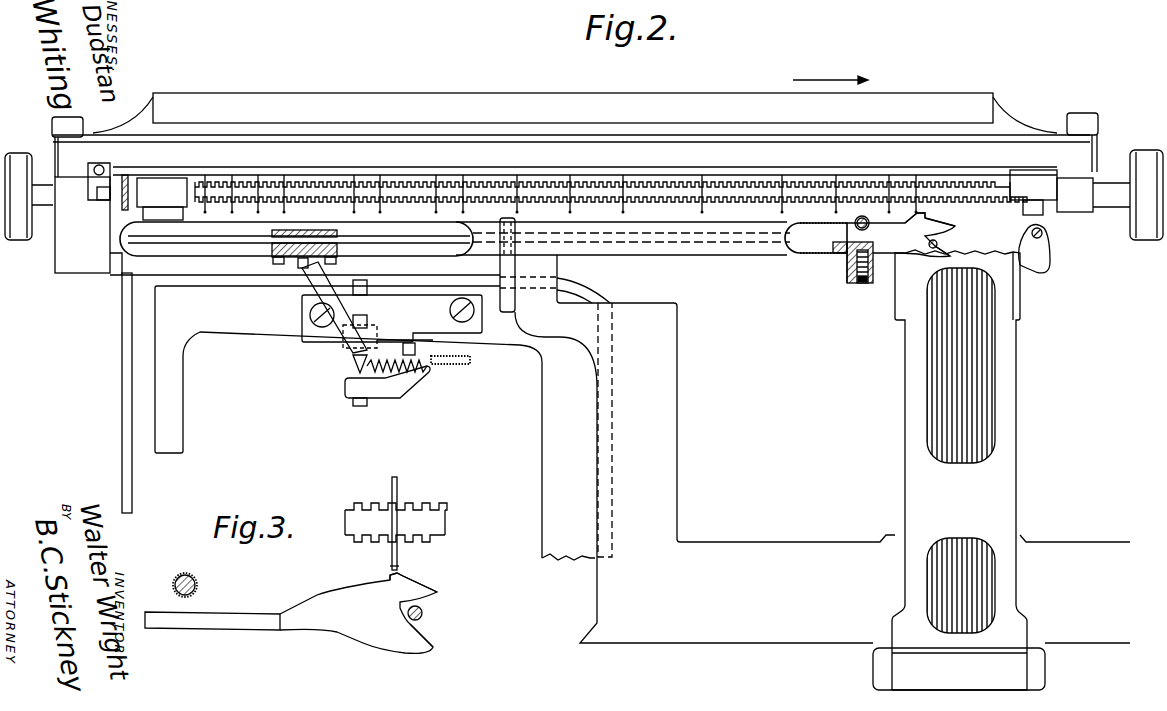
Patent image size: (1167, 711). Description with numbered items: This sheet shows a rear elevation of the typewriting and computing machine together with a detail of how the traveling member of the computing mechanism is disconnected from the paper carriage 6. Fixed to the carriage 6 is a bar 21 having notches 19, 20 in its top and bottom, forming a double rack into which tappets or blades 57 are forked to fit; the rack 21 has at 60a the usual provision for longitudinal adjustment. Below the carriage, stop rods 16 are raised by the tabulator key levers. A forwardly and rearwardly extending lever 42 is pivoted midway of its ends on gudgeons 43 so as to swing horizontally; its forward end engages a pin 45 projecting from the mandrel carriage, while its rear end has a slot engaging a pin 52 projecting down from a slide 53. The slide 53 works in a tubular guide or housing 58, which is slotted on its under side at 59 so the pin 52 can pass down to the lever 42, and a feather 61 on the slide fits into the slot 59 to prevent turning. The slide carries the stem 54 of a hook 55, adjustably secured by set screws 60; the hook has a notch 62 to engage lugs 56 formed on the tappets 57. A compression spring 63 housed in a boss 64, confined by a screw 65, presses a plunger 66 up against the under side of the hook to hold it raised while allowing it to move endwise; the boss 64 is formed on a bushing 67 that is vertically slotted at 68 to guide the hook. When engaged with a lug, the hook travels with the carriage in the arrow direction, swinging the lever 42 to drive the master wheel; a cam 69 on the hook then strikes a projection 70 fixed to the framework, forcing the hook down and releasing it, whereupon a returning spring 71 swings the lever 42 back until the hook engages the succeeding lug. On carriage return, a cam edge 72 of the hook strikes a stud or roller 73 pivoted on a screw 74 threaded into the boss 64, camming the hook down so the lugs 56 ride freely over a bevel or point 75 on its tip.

In FIG. 2, the carriage 6 is at (575, 113).
In FIG. 2, the stop rods 16 is at (946, 379).
In FIG. 2, the notches 19 is at (640, 180).
In FIG. 3, the notches 19 is at (440, 503).
In FIG. 2, the notches 20 is at (632, 200).
In FIG. 3, the notches 20 is at (356, 543).
In FIG. 2, the bar 21 is at (688, 190).
In FIG. 3, the bar 21 is at (395, 523).
In FIG. 2, the lever 42 is at (322, 343).
In FIG. 2, the gudgeons 43 is at (368, 323).
In FIG. 2, the pin 45 is at (438, 358).
In FIG. 2, the pin 52 is at (307, 266).
In FIG. 2, the slide 53 is at (330, 233).
In FIG. 2, the stem 54 is at (127, 240).
In FIG. 3, the stem 54 is at (185, 628).
In FIG. 2, the hook 55 is at (926, 215).
In FIG. 3, the hook 55 is at (410, 577).
In FIG. 3, the lugs 56 is at (390, 566).
In FIG. 2, the tappets or blades 57 is at (570, 181).
In FIG. 3, the tappets or blades 57 is at (392, 494).
In FIG. 2, the tubular guide or housing 58 is at (648, 256).
In FIG. 2, the slot 59 is at (395, 257).
In FIG. 2, the set screws 60 is at (274, 260).
In FIG. 2, the longitudinal adjustment provision 60a is at (120, 177).
In FIG. 2, the feather 61 is at (299, 262).
In FIG. 2, the notch 62 is at (919, 219).
In FIG. 3, the notch 62 is at (390, 585).
In FIG. 2, the compression spring 63 is at (848, 270).
In FIG. 2, the boss 64 is at (858, 281).
In FIG. 2, the screw 65 is at (866, 283).
In FIG. 2, the plunger 66 is at (852, 252).
In FIG. 2, the bushing 67 is at (830, 250).
In FIG. 2, the vertical slot 68 is at (845, 222).
In FIG. 2, the cam 69 is at (936, 255).
In FIG. 3, the cam 69 is at (430, 636).
In FIG. 3, the projection 70 is at (423, 614).
In FIG. 2, the returning spring 71 is at (428, 368).
In FIG. 2, the cam edge 72 is at (874, 228).
In FIG. 3, the cam edge 72 is at (297, 604).
In FIG. 2, the stud or roller 73 is at (857, 225).
In FIG. 3, the stud or roller 73 is at (197, 590).
In FIG. 2, the screw 74 is at (870, 220).
In FIG. 3, the screw 74 is at (194, 583).
In FIG. 2, the bevel or point 75 is at (950, 227).
In FIG. 3, the bevel or point 75 is at (438, 592).